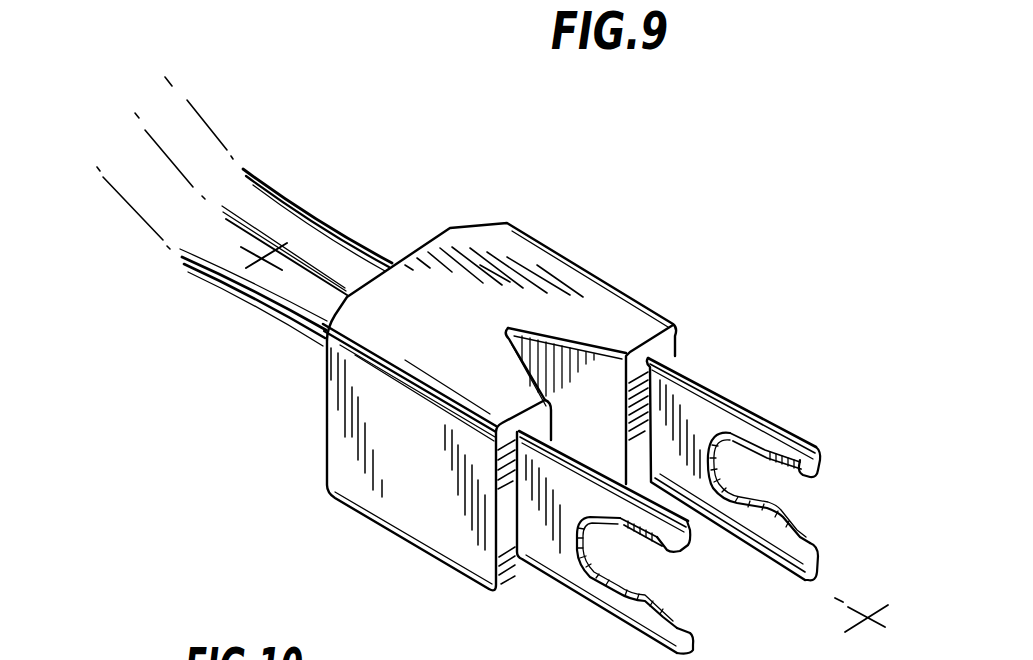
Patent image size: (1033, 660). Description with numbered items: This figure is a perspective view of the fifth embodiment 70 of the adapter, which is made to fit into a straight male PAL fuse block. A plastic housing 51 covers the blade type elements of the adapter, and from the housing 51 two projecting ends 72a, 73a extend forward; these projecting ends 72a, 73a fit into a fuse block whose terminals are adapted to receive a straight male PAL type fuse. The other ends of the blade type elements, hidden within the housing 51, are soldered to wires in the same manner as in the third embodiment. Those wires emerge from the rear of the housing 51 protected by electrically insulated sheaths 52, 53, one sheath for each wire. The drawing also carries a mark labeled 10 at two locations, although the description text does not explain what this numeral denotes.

The reference direction / position mark 10 is at (258, 242).
The plastic housing 51 is at (558, 273).
The electrically insulated sheath 52 is at (182, 137).
The electrically insulated sheath 53 is at (170, 217).
The fifth embodiment of the adapter 70 is at (656, 235).
The projecting end 72a is at (814, 392).
The projecting end 73a is at (572, 570).